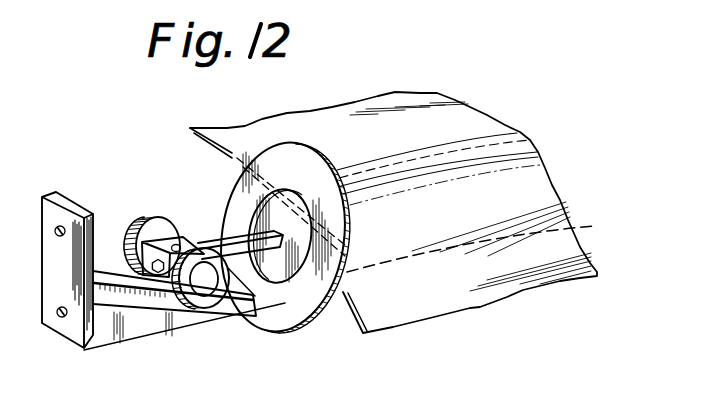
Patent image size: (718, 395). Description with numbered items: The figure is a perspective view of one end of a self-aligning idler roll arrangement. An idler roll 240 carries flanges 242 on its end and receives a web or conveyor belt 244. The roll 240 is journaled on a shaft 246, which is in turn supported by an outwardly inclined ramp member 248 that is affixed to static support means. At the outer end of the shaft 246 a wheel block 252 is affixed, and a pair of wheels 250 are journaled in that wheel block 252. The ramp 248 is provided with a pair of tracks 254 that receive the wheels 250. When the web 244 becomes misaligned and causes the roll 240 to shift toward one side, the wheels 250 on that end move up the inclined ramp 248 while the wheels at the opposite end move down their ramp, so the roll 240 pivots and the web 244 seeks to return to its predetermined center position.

The idler roll 240 is at (588, 227).
The flanges 242 is at (311, 156).
The web or conveyor belt 244 is at (493, 126).
The shaft 246 is at (268, 283).
The ramp member 248 is at (95, 328).
The wheels 250 is at (131, 229).
The wheel block 252 is at (177, 244).
The tracks 254 is at (139, 308).